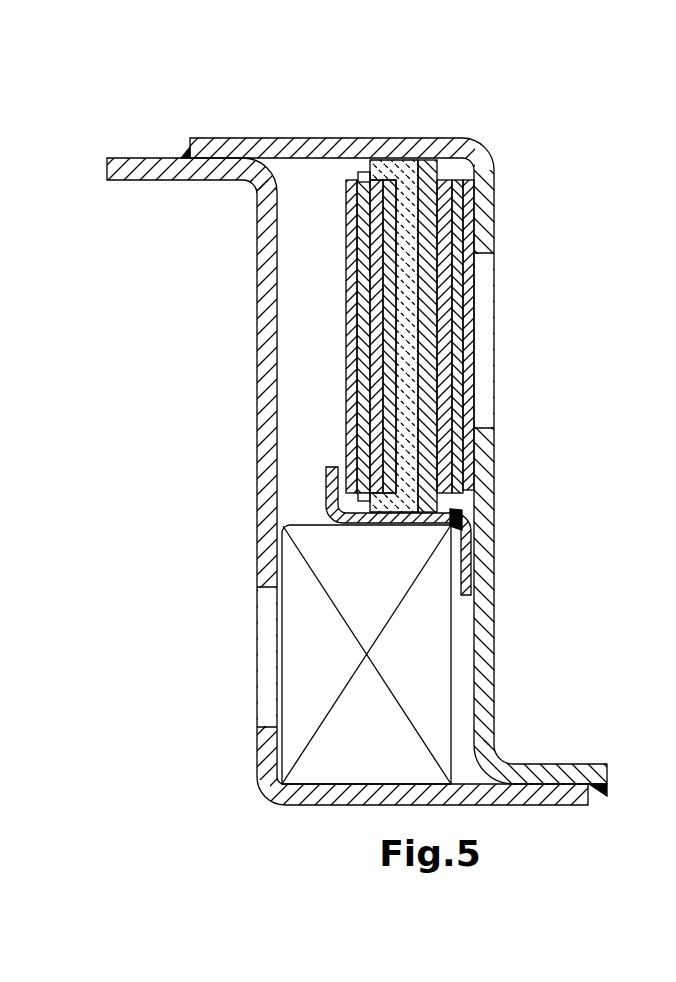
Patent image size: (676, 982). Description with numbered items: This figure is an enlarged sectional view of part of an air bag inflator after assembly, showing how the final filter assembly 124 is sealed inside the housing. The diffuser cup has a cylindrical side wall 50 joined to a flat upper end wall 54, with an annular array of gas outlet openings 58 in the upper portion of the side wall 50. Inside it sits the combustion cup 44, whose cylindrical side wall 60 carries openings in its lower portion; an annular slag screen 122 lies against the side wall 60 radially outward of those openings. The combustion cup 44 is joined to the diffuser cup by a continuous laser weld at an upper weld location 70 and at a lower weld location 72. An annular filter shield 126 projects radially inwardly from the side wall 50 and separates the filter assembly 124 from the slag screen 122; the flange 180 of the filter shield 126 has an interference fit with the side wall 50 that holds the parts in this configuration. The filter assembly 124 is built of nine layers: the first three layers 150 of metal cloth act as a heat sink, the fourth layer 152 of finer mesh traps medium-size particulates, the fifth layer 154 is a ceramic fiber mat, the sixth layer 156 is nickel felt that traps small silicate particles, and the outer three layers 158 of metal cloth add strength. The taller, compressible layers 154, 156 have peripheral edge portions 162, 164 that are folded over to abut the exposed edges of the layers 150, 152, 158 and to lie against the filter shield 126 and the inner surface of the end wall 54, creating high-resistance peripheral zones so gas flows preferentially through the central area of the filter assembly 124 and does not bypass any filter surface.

The combustion cup 44 is at (322, 800).
The side wall 50 is at (494, 455).
The upper end wall 54 is at (305, 146).
The gas outlet openings 58 is at (483, 420).
The side wall 60 is at (262, 412).
The weld location 70 is at (186, 153).
The weld location 72 is at (598, 792).
The slag screen 122 is at (418, 645).
The final filter assembly 124 is at (480, 288).
The filter shield 126 is at (457, 513).
The first three layers 150 is at (342, 336).
The fourth layer 152 is at (360, 197).
The fifth layer 154 is at (378, 258).
The sixth layer 156 is at (443, 317).
The outer three layers 158 is at (457, 208).
The peripheral edge portion 162 is at (388, 162).
The peripheral edge portion 164 is at (440, 165).
The flange 180 is at (473, 563).